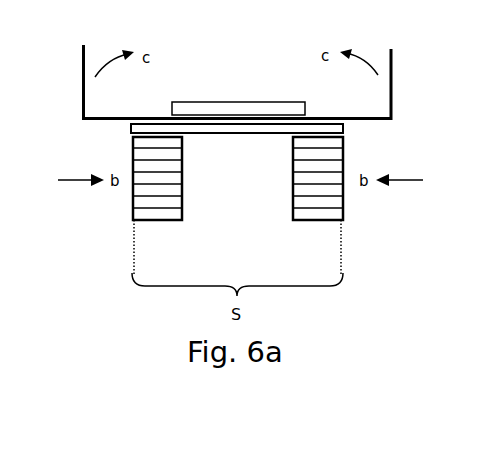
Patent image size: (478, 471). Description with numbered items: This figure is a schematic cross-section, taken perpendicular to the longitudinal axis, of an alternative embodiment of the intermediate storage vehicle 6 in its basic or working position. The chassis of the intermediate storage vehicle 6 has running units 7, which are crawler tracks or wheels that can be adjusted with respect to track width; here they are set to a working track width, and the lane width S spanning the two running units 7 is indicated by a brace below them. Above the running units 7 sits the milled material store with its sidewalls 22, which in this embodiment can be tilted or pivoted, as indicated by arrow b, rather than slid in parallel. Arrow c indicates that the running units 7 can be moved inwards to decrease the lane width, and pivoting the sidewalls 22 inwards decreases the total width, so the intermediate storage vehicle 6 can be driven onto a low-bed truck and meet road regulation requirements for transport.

The intermediate storage vehicle 6 is at (270, 86).
The running units of the chassis 7 is at (317, 203).
The sidewalls 22 is at (390, 75).